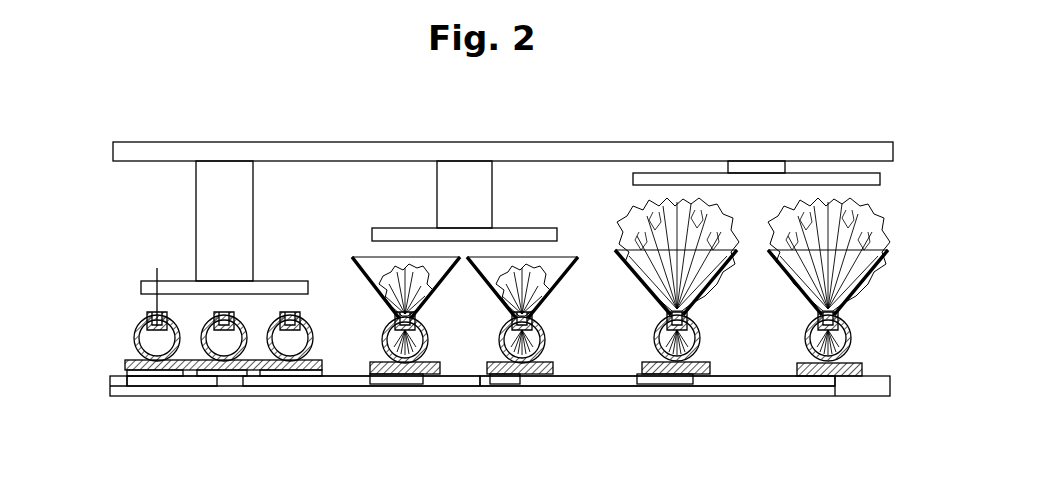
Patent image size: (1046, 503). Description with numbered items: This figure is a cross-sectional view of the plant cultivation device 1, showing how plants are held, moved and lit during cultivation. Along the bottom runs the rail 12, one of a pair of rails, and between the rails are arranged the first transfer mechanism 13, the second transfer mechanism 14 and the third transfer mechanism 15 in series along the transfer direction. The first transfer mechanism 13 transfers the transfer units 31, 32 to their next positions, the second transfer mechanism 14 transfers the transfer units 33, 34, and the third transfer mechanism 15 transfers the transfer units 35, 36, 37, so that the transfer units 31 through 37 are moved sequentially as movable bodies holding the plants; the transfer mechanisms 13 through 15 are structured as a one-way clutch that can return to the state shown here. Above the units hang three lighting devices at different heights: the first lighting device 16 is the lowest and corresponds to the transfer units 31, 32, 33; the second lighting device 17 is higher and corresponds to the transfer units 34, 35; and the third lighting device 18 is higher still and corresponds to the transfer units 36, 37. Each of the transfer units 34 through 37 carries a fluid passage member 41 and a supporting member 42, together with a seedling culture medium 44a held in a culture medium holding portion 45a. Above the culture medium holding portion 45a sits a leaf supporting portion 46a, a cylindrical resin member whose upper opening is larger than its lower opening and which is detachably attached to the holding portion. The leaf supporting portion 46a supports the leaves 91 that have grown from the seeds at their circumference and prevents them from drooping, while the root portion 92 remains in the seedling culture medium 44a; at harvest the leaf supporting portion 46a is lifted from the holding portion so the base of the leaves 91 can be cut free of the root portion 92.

The plant cultivation device 1 is at (871, 111).
The rail 12 is at (762, 397).
The first transfer mechanism 13 is at (193, 386).
The second transfer mechanism 14 is at (352, 386).
The third transfer mechanism 15 is at (605, 386).
The first lighting device 16 is at (266, 282).
The second lighting device 17 is at (526, 228).
The third lighting device 18 is at (800, 173).
The transfer unit 31 is at (157, 376).
The transfer unit 32 is at (227, 376).
The transfer unit 33 is at (288, 376).
The transfer unit 34 is at (405, 384).
The transfer unit 35 is at (522, 384).
The transfer unit 36 is at (693, 384).
The transfer unit 37 is at (837, 396).
The fluid passage member 41 is at (134, 344).
The supporting member 42 is at (125, 366).
The seedling culture medium 44a is at (157, 268).
The culture medium holding portion 45a is at (150, 314).
The leaf supporting portion 46a is at (348, 262).
The leaves 91 is at (886, 215).
The root portion 92 is at (850, 343).